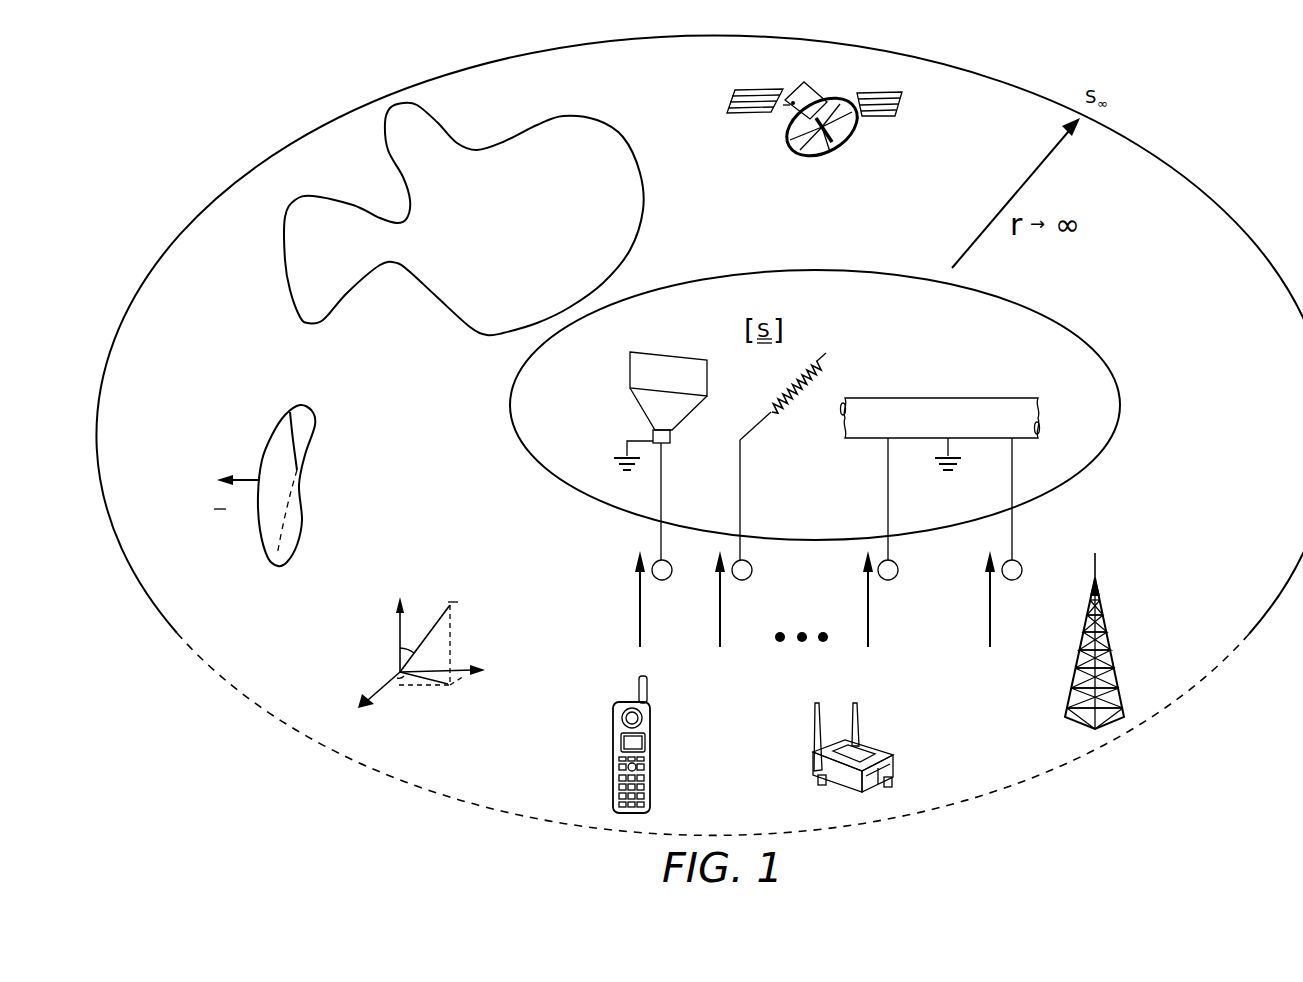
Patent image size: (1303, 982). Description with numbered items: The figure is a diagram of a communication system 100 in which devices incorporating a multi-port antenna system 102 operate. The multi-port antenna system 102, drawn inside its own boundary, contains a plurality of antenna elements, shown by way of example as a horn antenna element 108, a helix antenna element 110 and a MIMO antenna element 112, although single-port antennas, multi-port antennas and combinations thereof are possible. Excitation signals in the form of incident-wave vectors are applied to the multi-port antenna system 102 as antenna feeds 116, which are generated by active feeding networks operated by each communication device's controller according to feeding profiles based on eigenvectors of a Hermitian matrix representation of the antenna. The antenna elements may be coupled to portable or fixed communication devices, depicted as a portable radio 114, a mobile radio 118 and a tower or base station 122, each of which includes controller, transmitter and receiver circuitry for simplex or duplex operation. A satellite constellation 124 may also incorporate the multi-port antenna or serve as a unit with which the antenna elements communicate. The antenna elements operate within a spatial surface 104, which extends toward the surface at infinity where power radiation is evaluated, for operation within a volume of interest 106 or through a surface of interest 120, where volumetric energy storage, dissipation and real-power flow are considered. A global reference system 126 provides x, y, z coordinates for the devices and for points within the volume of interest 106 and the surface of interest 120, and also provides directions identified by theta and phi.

The communication system 100 is at (1277, 130).
The multi-port antenna system 102 is at (1060, 327).
The spatial surface 104 is at (950, 69).
The volume of interest 106 is at (603, 134).
The horn antenna element 108 is at (672, 352).
The helix antenna element 110 is at (819, 361).
The MIMO antenna element 112 is at (940, 398).
The portable radio 114 is at (613, 758).
The antenna feeds 116 is at (639, 598).
The mobile radio 118 is at (876, 752).
The surface of interest 120 is at (302, 521).
The tower or base station 122 is at (1109, 650).
The satellite constellation 124 is at (817, 151).
The global reference system 126 is at (416, 702).